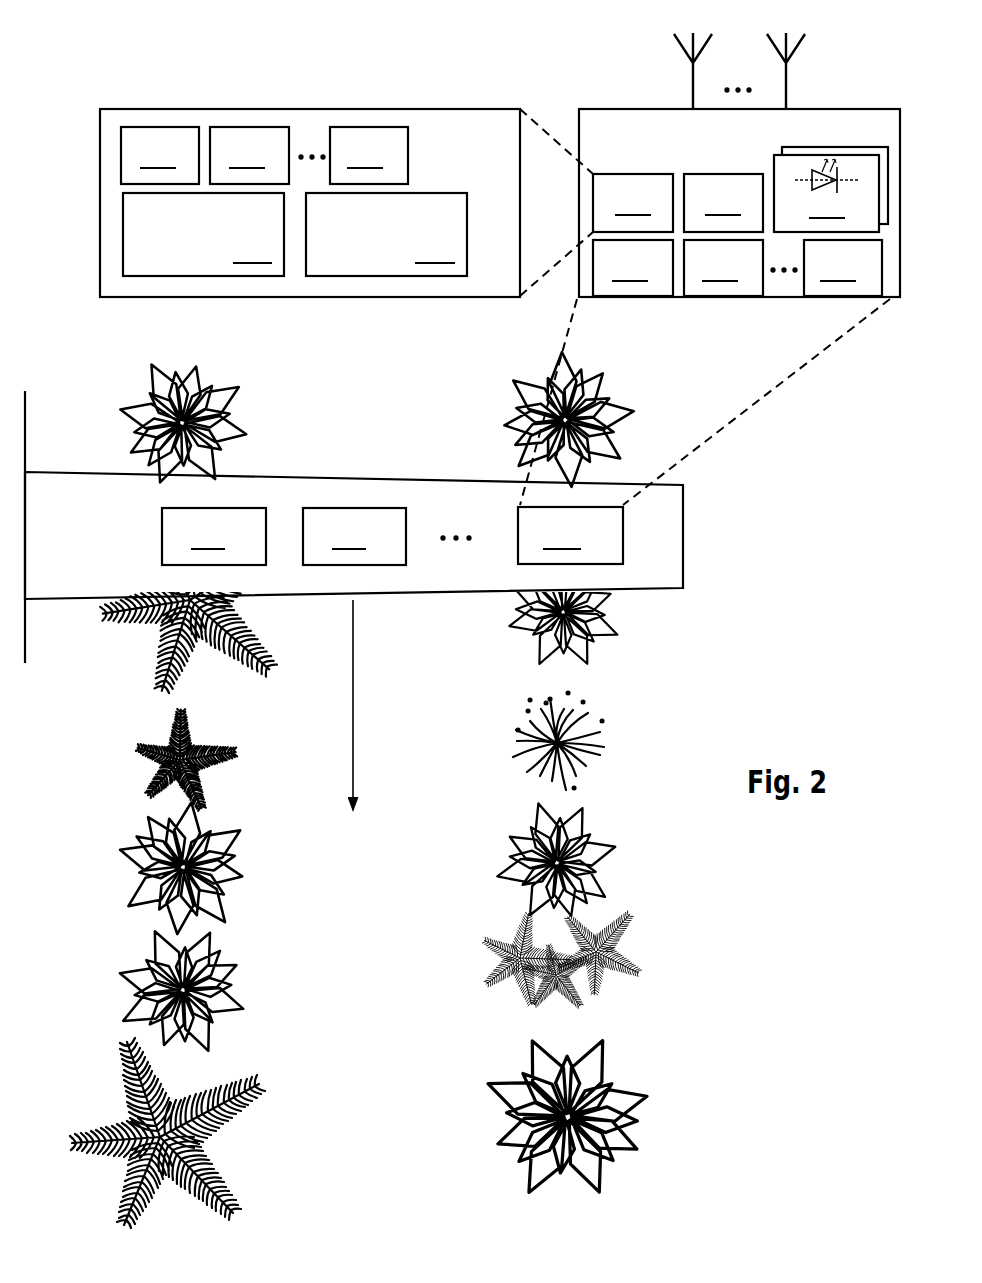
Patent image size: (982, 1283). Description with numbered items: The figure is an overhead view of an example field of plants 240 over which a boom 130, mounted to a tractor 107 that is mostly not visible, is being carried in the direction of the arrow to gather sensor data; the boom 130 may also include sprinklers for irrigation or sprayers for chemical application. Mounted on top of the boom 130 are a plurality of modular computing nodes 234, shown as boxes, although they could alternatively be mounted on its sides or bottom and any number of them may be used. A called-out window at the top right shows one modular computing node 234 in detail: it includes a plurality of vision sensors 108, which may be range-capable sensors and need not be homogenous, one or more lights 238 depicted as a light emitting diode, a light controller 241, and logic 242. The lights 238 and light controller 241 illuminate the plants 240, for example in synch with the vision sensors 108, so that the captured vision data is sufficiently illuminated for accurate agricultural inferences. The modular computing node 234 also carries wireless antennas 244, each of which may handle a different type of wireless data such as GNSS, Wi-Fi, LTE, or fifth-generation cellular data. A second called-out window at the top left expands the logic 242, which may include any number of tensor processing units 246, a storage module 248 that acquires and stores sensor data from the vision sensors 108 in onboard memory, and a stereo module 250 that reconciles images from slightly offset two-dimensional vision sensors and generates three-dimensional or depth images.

The tractor 107 is at (62, 428).
The boom 130 is at (683, 538).
The modular computing node 234 is at (604, 108).
The logic 242 is at (463, 108).
The light controller 241 is at (723, 203).
The light 238 is at (831, 189).
The vision sensor 108 is at (737, 268).
The wireless antenna 244 is at (822, 81).
The tensor processing unit 246 is at (264, 155).
The storage module 248 is at (203, 234).
The stereo module 250 is at (386, 234).
The plant 240 is at (452, 1074).